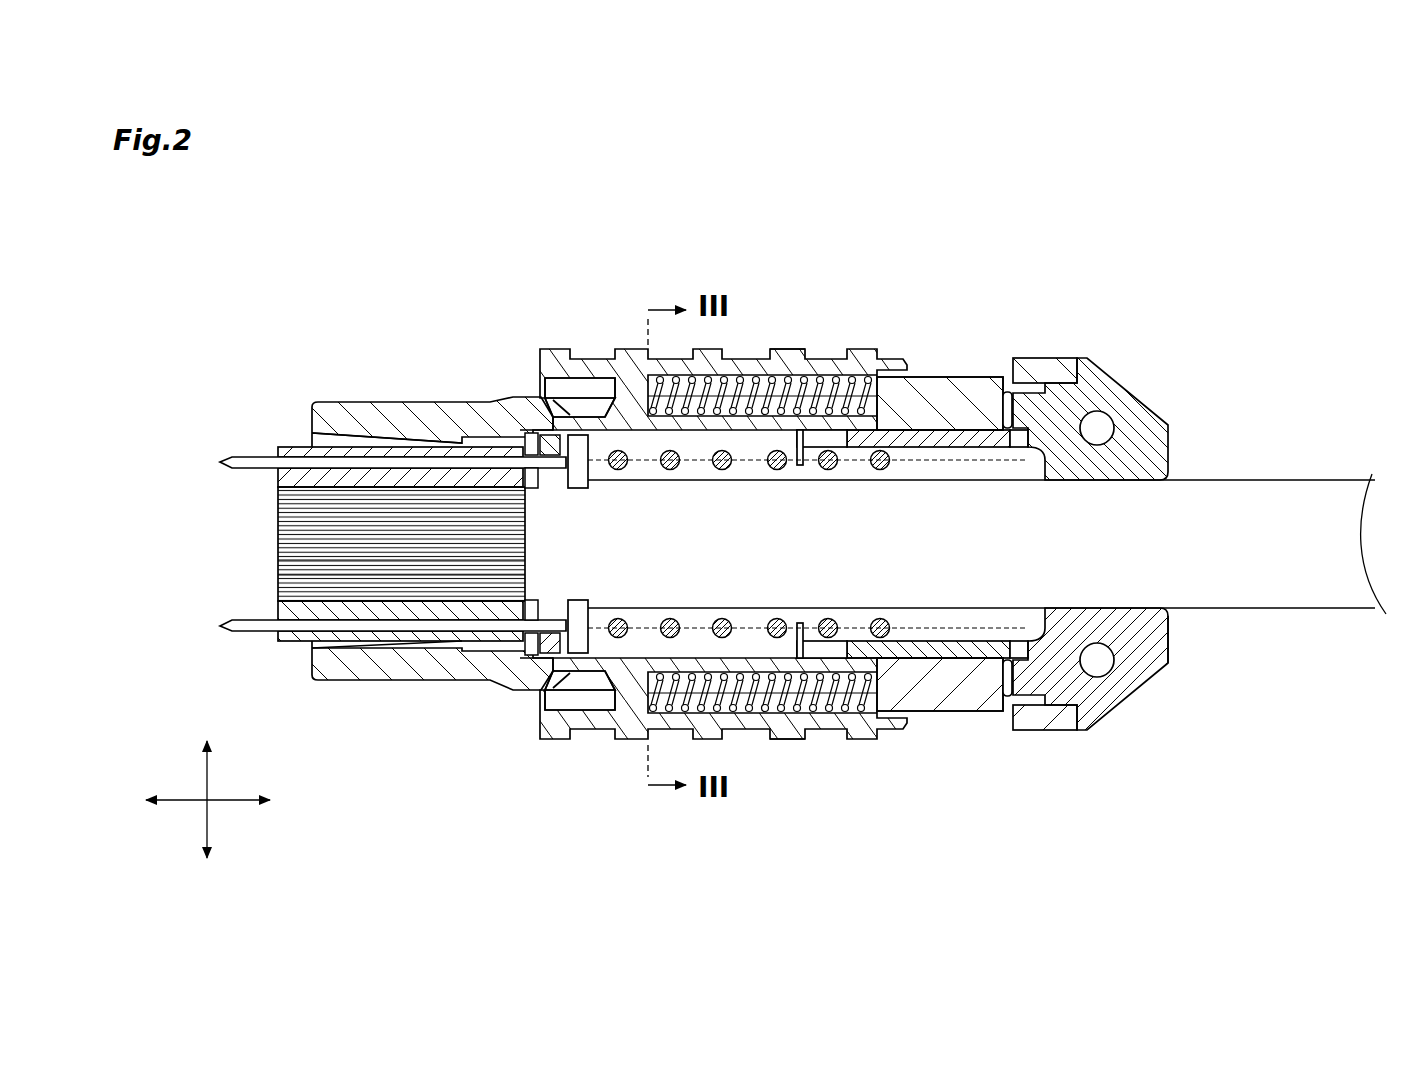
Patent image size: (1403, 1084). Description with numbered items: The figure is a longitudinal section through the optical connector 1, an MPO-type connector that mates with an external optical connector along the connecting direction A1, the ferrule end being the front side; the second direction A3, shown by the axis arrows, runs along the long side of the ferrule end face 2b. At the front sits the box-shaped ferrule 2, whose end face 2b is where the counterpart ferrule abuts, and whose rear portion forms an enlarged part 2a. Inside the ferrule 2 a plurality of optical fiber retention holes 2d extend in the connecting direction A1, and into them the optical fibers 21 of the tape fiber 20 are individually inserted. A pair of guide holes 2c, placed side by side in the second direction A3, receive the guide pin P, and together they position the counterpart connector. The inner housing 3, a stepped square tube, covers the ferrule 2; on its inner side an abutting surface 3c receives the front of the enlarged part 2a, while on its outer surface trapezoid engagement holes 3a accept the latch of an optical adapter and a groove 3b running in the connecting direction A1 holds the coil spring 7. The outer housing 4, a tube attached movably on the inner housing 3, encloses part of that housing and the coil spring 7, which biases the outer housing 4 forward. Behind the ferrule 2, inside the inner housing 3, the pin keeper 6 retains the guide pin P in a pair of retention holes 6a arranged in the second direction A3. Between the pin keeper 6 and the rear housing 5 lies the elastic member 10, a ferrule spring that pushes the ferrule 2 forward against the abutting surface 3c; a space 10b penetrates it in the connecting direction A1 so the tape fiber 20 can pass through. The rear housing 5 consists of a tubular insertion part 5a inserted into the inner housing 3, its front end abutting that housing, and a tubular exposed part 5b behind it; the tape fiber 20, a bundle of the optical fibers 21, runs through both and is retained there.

The optical connector 1 is at (1104, 246).
The ferrule 2 is at (368, 554).
The enlarged part 2a is at (462, 670).
The end face 2b is at (278, 549).
The guide holes 2c is at (291, 468).
The optical fiber retention holes 2d is at (398, 588).
The optical fibers 21 is at (358, 588).
The inner housing 3 is at (410, 400).
The engagement holes 3a is at (584, 414).
The groove 3b is at (792, 356).
The abutting surface 3c is at (474, 436).
The outer housing 4 is at (719, 346).
The rear housing 5 is at (1134, 376).
The insertion part 5a is at (928, 662).
The exposed part 5b is at (1170, 645).
The pin keeper 6 is at (549, 660).
The retention holes 6a is at (562, 418).
The coil spring 7 is at (816, 398).
The elastic member 10 is at (598, 642).
The space 10b is at (881, 402).
The tape fiber 20 is at (1311, 598).
The guide pin P is at (218, 462).
The connecting direction A1 is at (178, 805).
The second direction A3 is at (208, 802).